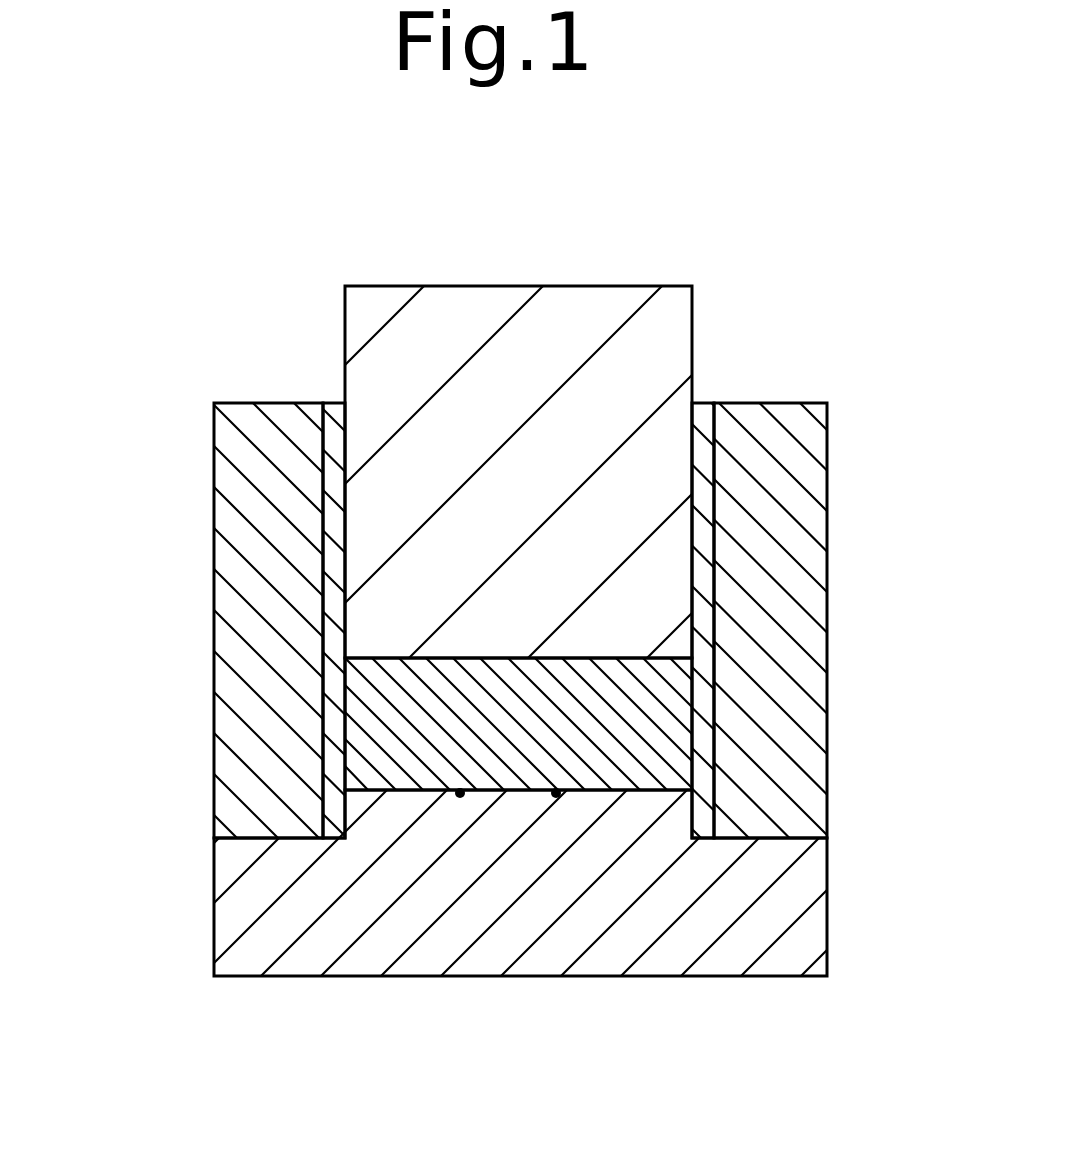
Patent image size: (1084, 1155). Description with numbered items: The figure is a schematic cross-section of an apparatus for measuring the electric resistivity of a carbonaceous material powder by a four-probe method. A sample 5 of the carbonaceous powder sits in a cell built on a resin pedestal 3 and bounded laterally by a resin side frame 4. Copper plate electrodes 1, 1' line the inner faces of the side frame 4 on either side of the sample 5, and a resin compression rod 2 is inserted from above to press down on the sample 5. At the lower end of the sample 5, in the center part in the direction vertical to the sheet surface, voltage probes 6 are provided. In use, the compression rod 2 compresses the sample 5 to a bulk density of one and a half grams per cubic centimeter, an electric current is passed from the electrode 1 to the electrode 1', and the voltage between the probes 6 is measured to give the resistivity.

The electrode 1 is at (208, 620).
The electrode 1' is at (815, 607).
The compression rod 2 is at (653, 365).
The pedestal 3 is at (770, 906).
The side frame 4 is at (795, 622).
The sample 5 is at (633, 737).
The voltage probe 6 is at (460, 793).